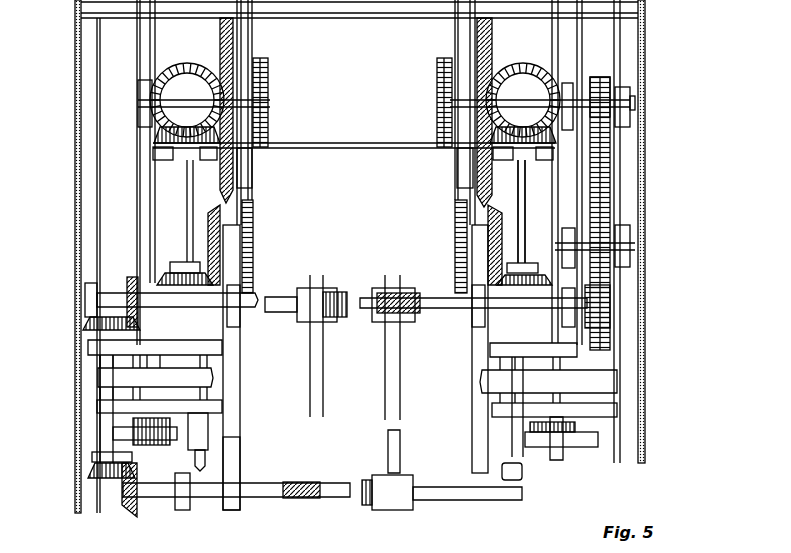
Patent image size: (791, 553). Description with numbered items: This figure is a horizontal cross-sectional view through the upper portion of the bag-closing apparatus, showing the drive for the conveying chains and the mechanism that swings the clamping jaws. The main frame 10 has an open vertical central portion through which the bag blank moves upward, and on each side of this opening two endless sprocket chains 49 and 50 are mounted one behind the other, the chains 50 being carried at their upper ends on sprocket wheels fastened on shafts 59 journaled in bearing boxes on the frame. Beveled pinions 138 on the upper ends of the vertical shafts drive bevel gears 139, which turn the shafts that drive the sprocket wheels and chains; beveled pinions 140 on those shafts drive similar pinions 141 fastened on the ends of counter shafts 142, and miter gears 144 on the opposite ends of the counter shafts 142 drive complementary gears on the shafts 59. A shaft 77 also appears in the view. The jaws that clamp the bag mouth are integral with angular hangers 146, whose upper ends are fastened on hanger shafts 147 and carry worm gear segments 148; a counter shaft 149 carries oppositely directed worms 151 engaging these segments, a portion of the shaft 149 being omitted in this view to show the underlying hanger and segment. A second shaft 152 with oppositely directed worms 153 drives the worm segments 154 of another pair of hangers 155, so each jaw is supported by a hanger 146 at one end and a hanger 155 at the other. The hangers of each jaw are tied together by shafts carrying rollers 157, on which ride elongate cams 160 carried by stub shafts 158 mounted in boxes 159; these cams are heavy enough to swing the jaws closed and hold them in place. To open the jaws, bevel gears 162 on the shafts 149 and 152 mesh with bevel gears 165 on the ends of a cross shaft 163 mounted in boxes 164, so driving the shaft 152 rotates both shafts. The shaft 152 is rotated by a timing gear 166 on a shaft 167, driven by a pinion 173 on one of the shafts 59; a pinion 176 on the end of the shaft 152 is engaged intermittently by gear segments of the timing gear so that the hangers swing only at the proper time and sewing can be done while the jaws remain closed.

The main frame 10 is at (80, 40).
The endless sprocket chains 49 is at (268, 105).
The endless sprocket chains 50 is at (253, 233).
The shafts 59 is at (590, 82).
The shaft 77 is at (340, 143).
The beveled pinions 138 is at (206, 58).
The bevel gears 139 is at (220, 31).
The beveled pinions 140 is at (150, 72).
The pinions 141 is at (206, 130).
The counter shafts 142 is at (526, 215).
The miter gears 144 is at (170, 265).
The angular hangers 146 is at (455, 500).
The hanger shafts 147 is at (388, 442).
The worm gear segments 148 is at (372, 495).
The counter shaft 149 is at (250, 497).
The worms 151 is at (325, 462).
The shaft 152 is at (245, 310).
The worms 153 is at (405, 290).
The worm segments 154 is at (335, 292).
The hangers 155 is at (300, 290).
The rollers 157 is at (213, 437).
The stub shafts 158 is at (98, 375).
The boxes 159 is at (97, 407).
The elongate cams 160 is at (113, 433).
The bevel gears 162 is at (130, 278).
The cross shaft 163 is at (105, 445).
The boxes 164 is at (92, 457).
The bevel gears 165 is at (88, 326).
The timing gear 166 is at (610, 198).
The shaft 167 is at (632, 241).
The pinion 173 is at (630, 92).
The pinion 176 is at (612, 308).